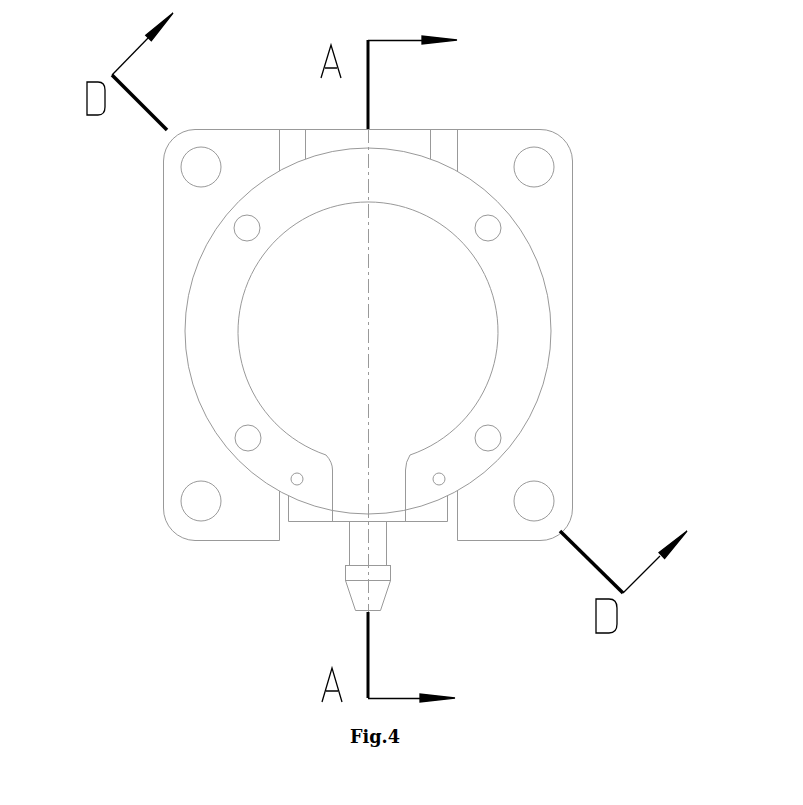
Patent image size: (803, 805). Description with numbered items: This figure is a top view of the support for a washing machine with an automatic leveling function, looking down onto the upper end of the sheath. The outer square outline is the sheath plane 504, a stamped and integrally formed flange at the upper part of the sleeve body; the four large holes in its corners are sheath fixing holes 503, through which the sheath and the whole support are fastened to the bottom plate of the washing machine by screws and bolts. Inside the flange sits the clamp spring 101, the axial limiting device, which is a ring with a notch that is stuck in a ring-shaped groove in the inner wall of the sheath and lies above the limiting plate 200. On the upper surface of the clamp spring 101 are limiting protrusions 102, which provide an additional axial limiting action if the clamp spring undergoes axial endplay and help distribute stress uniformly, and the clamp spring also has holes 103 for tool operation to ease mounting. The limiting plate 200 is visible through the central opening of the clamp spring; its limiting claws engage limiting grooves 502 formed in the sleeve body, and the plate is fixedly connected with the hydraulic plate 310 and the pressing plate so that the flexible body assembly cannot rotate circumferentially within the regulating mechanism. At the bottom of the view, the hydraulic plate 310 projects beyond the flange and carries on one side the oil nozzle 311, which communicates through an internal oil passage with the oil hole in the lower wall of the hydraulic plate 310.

The clamp spring 101 is at (220, 385).
The limiting protrusion 102 is at (247, 228).
The hole 103 is at (297, 479).
The limiting plate 200 is at (383, 334).
The hydraulic plate 310 is at (440, 521).
The oil nozzle 311 is at (345, 580).
The limiting groove 502 is at (445, 129).
The sheath fixing hole 503 is at (534, 167).
The sheath plane 504 is at (557, 210).